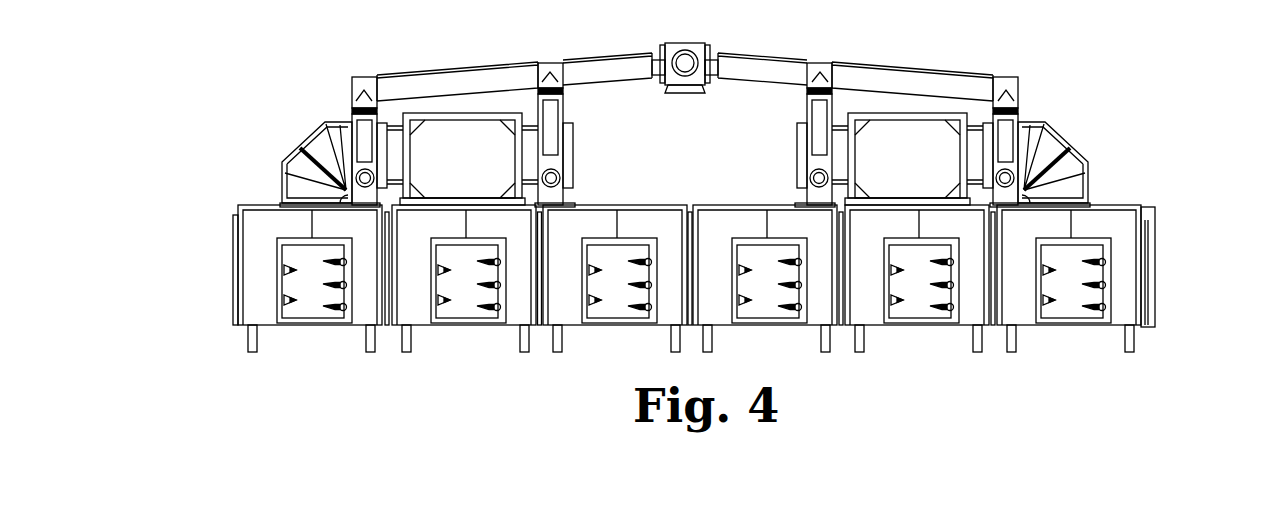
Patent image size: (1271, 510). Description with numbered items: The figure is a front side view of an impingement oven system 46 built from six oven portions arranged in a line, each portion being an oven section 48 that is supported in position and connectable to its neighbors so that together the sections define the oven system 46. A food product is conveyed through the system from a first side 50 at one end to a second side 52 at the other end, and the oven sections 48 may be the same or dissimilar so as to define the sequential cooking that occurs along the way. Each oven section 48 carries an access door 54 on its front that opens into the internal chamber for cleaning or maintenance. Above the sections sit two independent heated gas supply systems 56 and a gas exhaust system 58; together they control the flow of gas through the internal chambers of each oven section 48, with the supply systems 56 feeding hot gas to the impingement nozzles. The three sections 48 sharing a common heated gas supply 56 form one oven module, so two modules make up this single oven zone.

The impingement oven system 46 is at (203, 222).
The oven section 48 is at (707, 210).
The first side 50 is at (235, 280).
The second side 52 is at (1157, 288).
The access door 54 is at (318, 262).
The heated gas supply system 56 is at (440, 148).
The gas exhaust system 58 is at (607, 65).